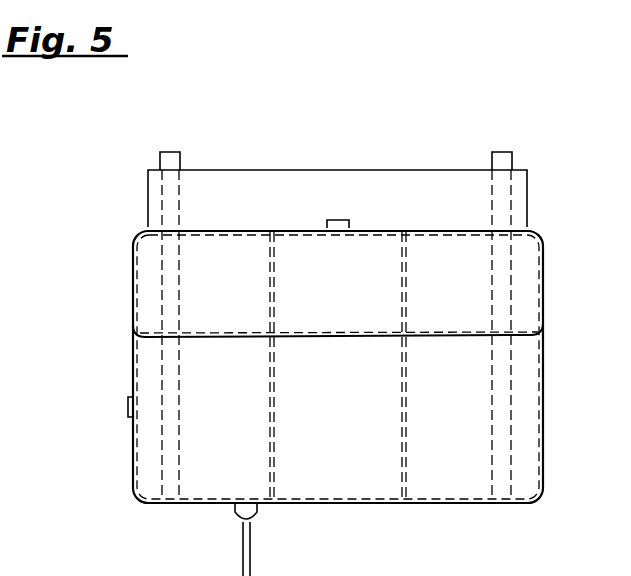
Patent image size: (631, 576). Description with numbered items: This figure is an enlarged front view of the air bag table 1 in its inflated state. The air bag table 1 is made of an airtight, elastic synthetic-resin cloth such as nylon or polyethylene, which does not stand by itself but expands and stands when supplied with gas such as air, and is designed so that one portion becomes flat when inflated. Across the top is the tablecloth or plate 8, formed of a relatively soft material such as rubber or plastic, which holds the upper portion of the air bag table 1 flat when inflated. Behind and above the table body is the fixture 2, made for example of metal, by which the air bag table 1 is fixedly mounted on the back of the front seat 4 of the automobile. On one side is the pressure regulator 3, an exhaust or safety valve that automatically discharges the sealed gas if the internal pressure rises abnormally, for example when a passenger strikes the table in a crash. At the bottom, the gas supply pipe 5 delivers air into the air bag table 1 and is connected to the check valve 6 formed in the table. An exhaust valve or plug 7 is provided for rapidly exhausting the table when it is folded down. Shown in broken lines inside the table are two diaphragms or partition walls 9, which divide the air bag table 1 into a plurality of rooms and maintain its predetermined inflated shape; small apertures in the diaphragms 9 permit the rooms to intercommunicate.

The air bag table 1 is at (545, 372).
The fixture 2 is at (172, 163).
The pressure regulator 3 is at (127, 402).
The front seat 4 is at (520, 190).
The gas supply pipe 5 is at (252, 567).
The check valve 6 is at (258, 512).
The exhaust valve or plug 7 is at (334, 220).
The tablecloth or plate 8 is at (536, 229).
The diaphragms or partition walls 9 is at (402, 465).